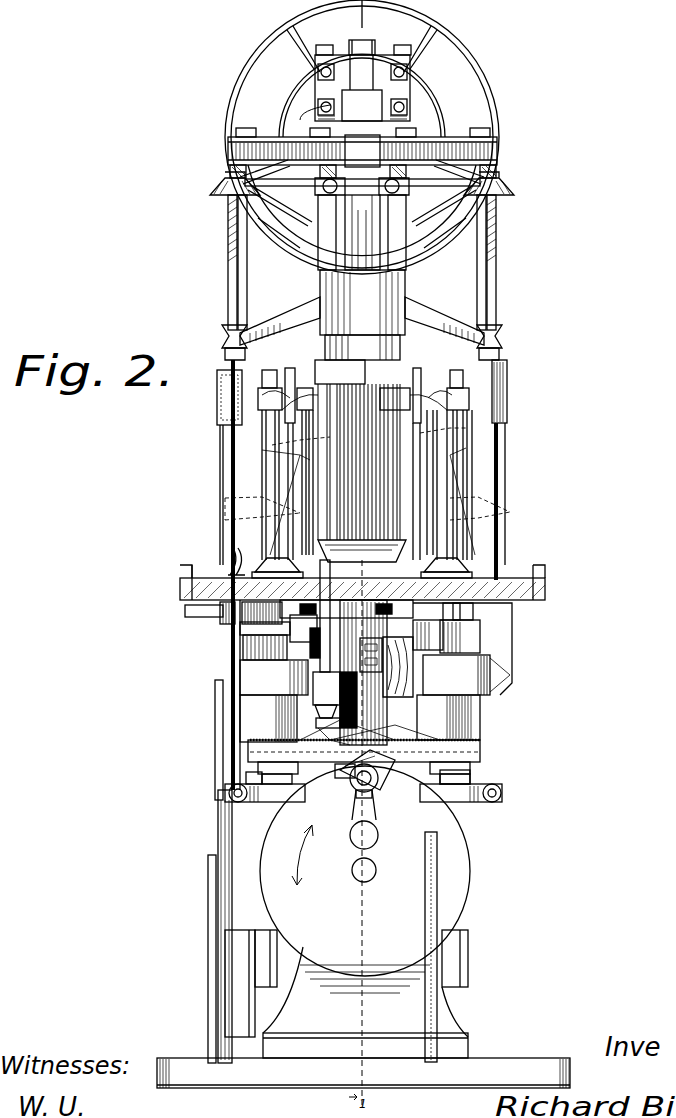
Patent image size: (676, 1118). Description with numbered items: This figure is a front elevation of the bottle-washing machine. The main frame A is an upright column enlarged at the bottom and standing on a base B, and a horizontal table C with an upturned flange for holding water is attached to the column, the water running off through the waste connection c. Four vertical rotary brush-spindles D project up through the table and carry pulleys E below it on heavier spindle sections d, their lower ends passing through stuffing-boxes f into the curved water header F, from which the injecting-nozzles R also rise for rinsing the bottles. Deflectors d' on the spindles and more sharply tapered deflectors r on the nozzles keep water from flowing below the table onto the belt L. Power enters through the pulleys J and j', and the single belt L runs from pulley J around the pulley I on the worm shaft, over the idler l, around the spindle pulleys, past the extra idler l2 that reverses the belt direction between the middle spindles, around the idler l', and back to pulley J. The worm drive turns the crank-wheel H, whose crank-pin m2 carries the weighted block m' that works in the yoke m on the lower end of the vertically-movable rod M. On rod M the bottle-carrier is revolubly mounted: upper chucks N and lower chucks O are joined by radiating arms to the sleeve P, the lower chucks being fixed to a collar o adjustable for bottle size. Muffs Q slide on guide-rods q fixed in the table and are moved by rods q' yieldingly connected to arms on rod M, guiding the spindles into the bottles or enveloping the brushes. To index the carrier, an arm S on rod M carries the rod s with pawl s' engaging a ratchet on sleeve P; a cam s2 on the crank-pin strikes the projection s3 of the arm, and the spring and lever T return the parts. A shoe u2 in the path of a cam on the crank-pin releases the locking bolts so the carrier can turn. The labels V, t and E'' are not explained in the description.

The pulley J is at (351, 137).
The pulley j' is at (292, 108).
The vertically-movable rod M is at (368, 70).
The main frame A is at (336, 126).
The upper tapering chucks or holders N is at (212, 190).
The vertical rods q' is at (366, 262).
The sleeve P is at (362, 232).
The belt L is at (230, 272).
The collar o is at (320, 310).
The lower tapering chucks or holders O is at (222, 337).
The vertically-movable sleeves or muffs Q is at (240, 378).
The pawl s' is at (340, 372).
The guide-rods q is at (360, 470).
The vertical rotary brush-spindles D is at (330, 470).
The cup V is at (338, 492).
The vertical injecting-nozzles R is at (228, 510).
The deflectors r is at (226, 552).
The deflectors d' is at (367, 557).
The horizontal table C is at (180, 584).
The waste opening or connection c is at (196, 617).
The spring and lever T is at (222, 620).
The rod t is at (338, 606).
The vertical rod s is at (305, 636).
The arm E'' is at (429, 630).
The spindle sections d is at (470, 616).
The idler l' is at (478, 649).
The pulleys E is at (357, 682).
The extra idler l2 is at (388, 658).
The idler l is at (214, 580).
The arm S is at (369, 672).
The projection s3 is at (316, 723).
The grooved cross-head or yoke m is at (384, 747).
The cam s2 is at (367, 770).
The curved horizontal pipe or header F is at (226, 798).
The stuffing-boxes f is at (470, 776).
The crank-pin m2 is at (380, 786).
The weighted block m' is at (340, 786).
The shoe u2 is at (255, 796).
The crank-wheel H is at (364, 895).
The pulley I is at (207, 848).
The base B is at (363, 1073).